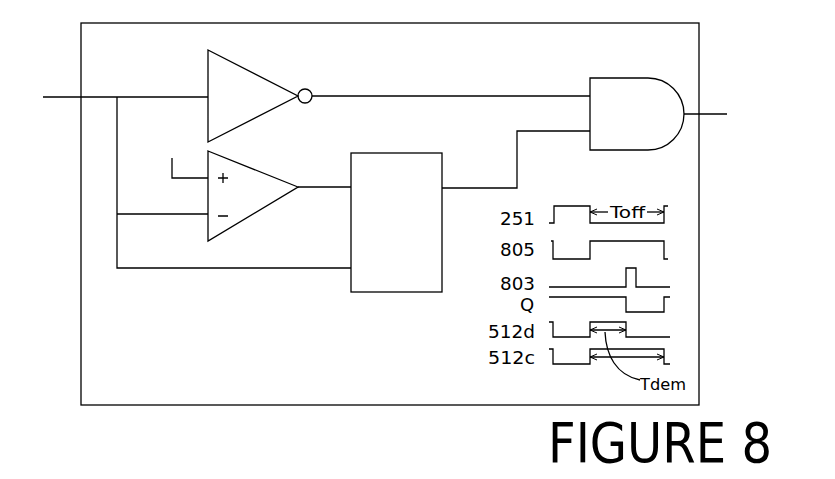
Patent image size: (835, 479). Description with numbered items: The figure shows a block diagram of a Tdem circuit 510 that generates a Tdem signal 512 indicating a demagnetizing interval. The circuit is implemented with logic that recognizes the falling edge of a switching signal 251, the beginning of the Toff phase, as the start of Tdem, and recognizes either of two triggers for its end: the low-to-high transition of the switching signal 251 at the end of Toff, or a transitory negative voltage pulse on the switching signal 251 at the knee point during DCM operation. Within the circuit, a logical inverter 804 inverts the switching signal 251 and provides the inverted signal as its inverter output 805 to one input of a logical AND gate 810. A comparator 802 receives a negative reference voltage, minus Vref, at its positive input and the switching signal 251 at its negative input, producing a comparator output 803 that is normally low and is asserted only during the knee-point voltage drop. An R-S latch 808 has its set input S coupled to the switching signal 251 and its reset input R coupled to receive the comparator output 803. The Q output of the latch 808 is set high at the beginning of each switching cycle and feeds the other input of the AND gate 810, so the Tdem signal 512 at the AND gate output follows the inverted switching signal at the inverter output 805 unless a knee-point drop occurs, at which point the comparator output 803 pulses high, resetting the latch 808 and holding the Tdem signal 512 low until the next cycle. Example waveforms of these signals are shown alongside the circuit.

The Tdem circuit 510 is at (390, 214).
The switching signal 251 is at (70, 99).
The logical inverter 804 is at (260, 96).
The inverter output 805 is at (360, 98).
The comparator 802 is at (216, 188).
The comparator output 803 is at (335, 190).
The R-S latch 808 is at (470, 211).
The logical AND gate 810 is at (637, 114).
The Tdem signal 512 is at (716, 116).